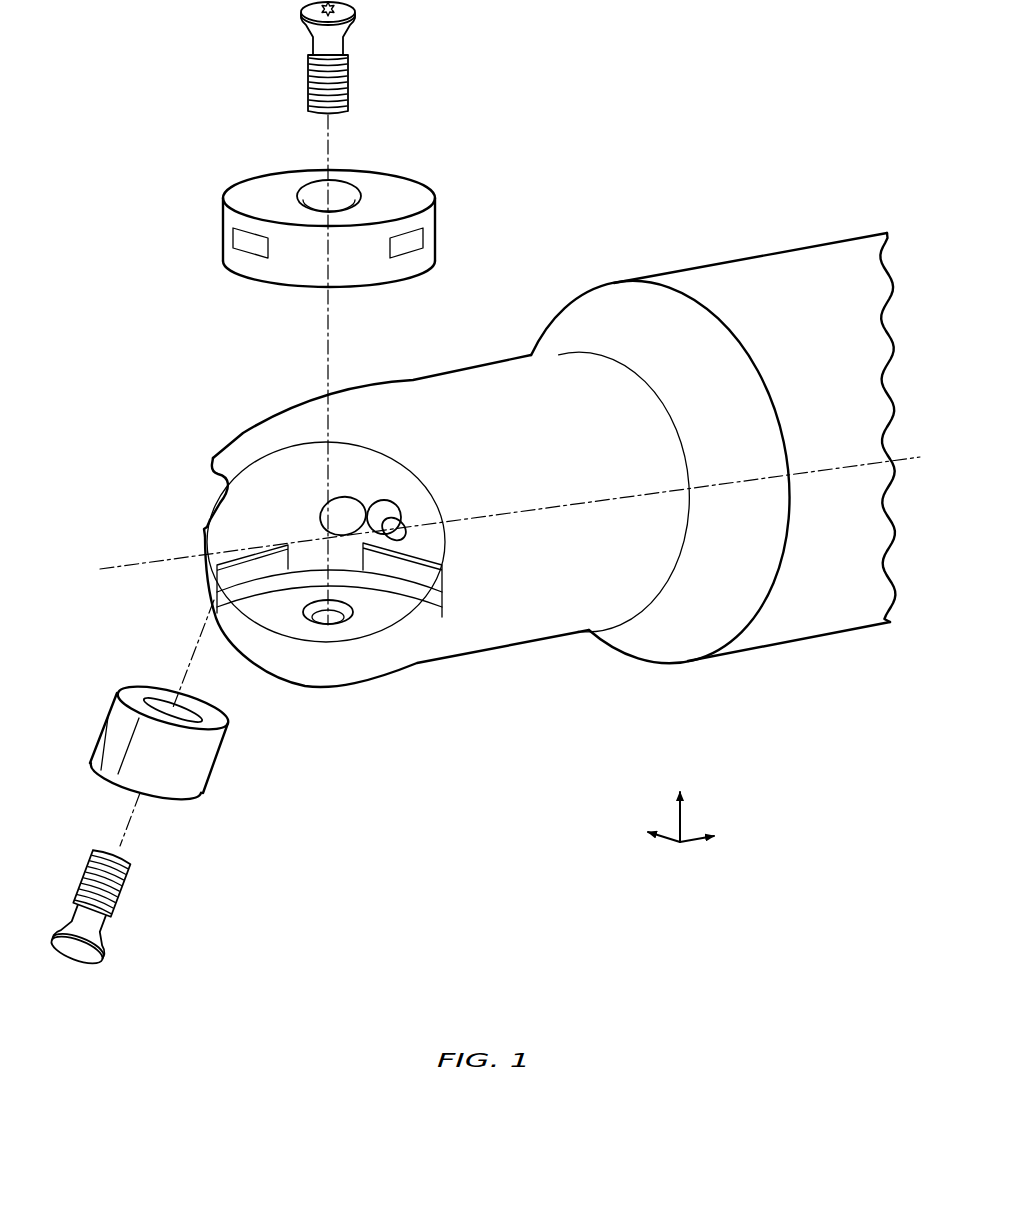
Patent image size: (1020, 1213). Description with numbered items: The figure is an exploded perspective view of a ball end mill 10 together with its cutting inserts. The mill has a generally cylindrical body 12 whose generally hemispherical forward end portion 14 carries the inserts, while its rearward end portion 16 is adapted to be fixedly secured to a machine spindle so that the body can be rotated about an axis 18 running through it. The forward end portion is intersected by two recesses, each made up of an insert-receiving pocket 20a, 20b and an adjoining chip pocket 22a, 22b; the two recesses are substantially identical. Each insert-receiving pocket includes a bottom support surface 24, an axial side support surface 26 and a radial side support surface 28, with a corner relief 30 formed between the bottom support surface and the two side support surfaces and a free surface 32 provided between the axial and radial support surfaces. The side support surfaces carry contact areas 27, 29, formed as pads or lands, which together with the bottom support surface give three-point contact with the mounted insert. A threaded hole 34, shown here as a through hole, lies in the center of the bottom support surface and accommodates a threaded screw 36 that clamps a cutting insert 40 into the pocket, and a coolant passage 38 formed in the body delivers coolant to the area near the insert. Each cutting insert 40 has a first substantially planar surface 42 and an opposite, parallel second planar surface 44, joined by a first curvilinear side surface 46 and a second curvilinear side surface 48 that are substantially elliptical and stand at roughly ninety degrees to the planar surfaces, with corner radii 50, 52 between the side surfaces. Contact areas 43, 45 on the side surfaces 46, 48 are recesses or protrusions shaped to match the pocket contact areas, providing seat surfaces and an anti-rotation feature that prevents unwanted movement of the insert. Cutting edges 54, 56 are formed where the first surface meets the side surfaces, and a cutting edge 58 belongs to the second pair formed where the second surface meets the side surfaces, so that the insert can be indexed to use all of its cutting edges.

The ball end mill 10 is at (605, 170).
The body 12 is at (743, 253).
The forward end portion 14 is at (218, 385).
The rearward end portion 16 is at (773, 218).
The axis 18 is at (863, 458).
The insert-receiving pocket 20a is at (281, 506).
The insert-receiving pocket 20b is at (208, 482).
The chip pocket 22a is at (260, 513).
The chip pocket 22b is at (197, 522).
The bottom support surface 24 is at (308, 630).
The axial side support surface 26 is at (236, 536).
The contact area 27 is at (247, 568).
The radial side support surface 28 is at (421, 541).
The contact area 29 is at (410, 573).
The corner relief 30 is at (230, 597).
The free surface 32 is at (300, 480).
The threaded hole 34 is at (338, 620).
The threaded screw 36 is at (372, 33).
The coolant passage 38 is at (354, 515).
The cutting insert 40 is at (449, 212).
The first substantially planar surface 42 is at (262, 188).
The contact area 43 is at (252, 248).
The second substantially planar surface 44 is at (262, 280).
The contact area 45 is at (412, 246).
The first curvilinear side surface 46 is at (308, 270).
The second curvilinear side surface 48 is at (108, 720).
The corner radius 50 is at (435, 238).
The corner radius 52 is at (223, 213).
The cutting edge 54 is at (400, 212).
The cutting edge 56 is at (368, 168).
The cutting edge 58 is at (394, 280).